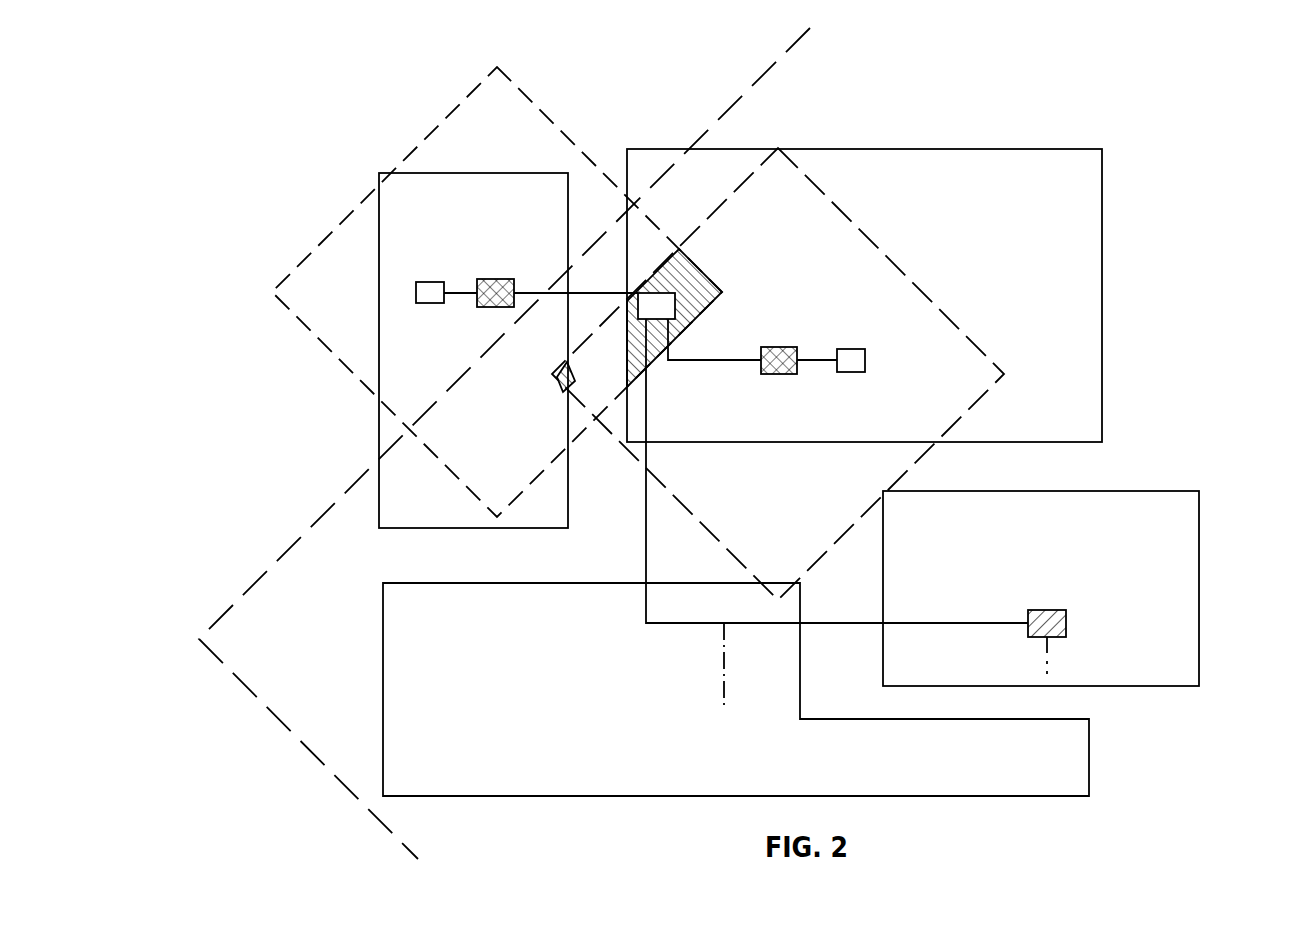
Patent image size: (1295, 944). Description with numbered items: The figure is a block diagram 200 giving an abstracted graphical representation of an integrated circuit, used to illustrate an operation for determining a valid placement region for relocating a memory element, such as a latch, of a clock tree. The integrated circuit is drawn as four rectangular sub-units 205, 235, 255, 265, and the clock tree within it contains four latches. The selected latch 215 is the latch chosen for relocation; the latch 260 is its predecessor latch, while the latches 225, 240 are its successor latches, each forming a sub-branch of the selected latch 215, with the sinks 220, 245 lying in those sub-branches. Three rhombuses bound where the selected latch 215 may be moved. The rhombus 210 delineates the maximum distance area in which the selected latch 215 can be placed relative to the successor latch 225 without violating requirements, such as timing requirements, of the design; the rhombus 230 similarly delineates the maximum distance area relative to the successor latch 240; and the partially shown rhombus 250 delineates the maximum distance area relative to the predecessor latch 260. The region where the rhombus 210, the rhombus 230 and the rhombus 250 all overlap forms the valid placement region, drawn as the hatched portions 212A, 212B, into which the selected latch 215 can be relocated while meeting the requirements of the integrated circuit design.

The block diagram 200 is at (1208, 66).
The sub-unit 205 is at (1102, 277).
The rhombus 210 is at (853, 222).
The valid placement region 212A is at (700, 266).
The valid placement region 212B is at (548, 380).
The selected latch 215 is at (677, 307).
The sink 220 is at (865, 356).
The successor latch 225 is at (778, 375).
The rhombus 230 is at (313, 338).
The sub-unit 235 is at (378, 432).
The successor latch 240 is at (497, 278).
The sink 245 is at (428, 303).
The rhombus 250 is at (308, 530).
The sub-unit 255 is at (382, 670).
The predecessor latch 260 is at (1067, 623).
The sub-unit 265 is at (1113, 687).